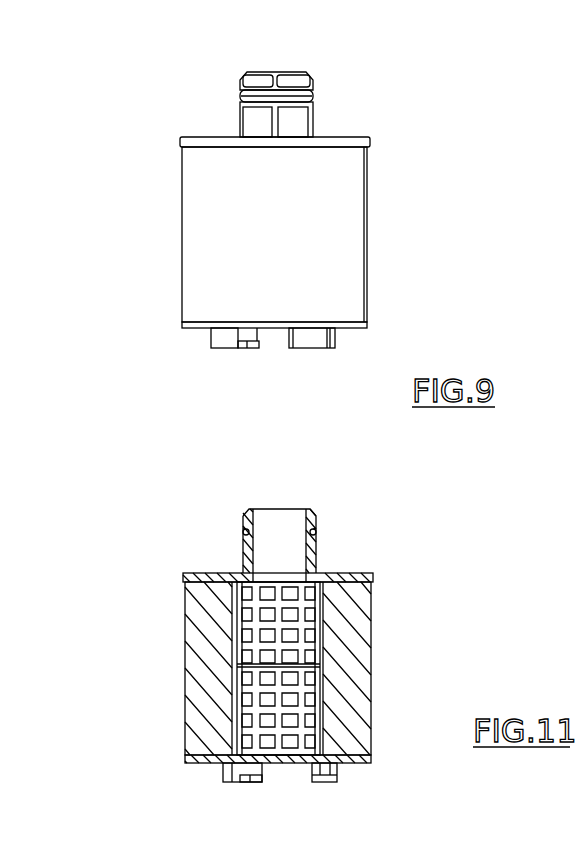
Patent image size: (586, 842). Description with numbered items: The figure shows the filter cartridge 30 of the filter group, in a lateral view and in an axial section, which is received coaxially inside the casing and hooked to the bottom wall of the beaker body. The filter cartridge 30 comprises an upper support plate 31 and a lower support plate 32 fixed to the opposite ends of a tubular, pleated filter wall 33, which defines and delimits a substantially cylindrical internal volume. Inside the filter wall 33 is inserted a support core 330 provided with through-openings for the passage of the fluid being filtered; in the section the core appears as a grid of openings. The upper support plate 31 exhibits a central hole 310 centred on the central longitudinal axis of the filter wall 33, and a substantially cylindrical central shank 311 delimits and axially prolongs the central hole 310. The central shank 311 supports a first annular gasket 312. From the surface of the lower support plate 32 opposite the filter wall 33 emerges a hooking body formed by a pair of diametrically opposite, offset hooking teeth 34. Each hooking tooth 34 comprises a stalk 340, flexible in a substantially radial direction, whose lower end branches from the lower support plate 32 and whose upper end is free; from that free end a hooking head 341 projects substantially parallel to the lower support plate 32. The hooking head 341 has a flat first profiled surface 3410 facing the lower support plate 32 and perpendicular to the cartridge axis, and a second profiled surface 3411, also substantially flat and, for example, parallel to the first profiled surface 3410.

In FIG. 9, the filter cartridge 30 is at (152, 118).
In FIG. 11, the filter cartridge 30 is at (138, 547).
In FIG. 9, the upper support plate 31 is at (352, 137).
In FIG. 11, the upper support plate 31 is at (365, 573).
In FIG. 11, the central hole 310 is at (279, 574).
In FIG. 9, the central shank 311 is at (310, 73).
In FIG. 11, the central shank 311 is at (316, 548).
In FIG. 9, the first annular gasket 312 is at (240, 96).
In FIG. 11, the first annular gasket 312 is at (316, 530).
In FIG. 9, the lower support plate 32 is at (366, 329).
In FIG. 11, the lower support plate 32 is at (371, 763).
In FIG. 9, the filter wall 33 is at (353, 218).
In FIG. 11, the filter wall 33 is at (371, 672).
In FIG. 11, the support core 330 is at (303, 607).
In FIG. 9, the hooking tooth 34 is at (212, 352).
In FIG. 11, the hooking tooth 34 is at (207, 772).
In FIG. 11, the stalk 340 is at (337, 773).
In FIG. 9, the hooking head 341 is at (0, 212).
In FIG. 11, the hooking head 341 is at (313, 778).
In FIG. 9, the first profiled surface 3410 is at (0, 189).
In FIG. 11, the first profiled surface 3410 is at (312, 770).
In FIG. 9, the second profiled surface 3411 is at (0, 248).
In FIG. 11, the second profiled surface 3411 is at (327, 784).